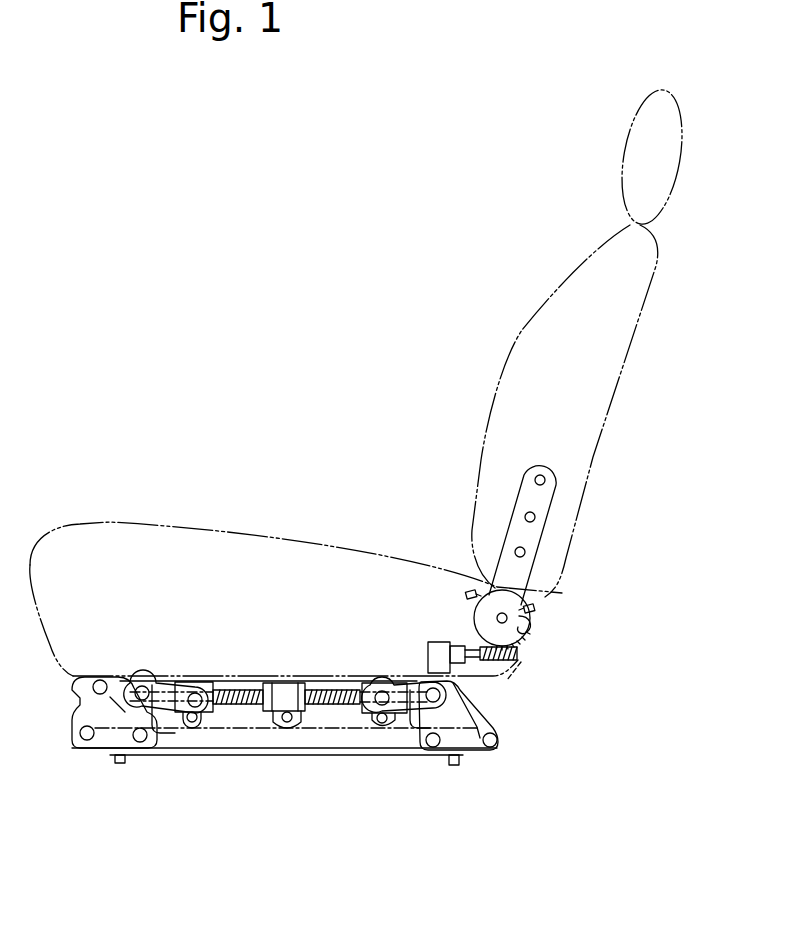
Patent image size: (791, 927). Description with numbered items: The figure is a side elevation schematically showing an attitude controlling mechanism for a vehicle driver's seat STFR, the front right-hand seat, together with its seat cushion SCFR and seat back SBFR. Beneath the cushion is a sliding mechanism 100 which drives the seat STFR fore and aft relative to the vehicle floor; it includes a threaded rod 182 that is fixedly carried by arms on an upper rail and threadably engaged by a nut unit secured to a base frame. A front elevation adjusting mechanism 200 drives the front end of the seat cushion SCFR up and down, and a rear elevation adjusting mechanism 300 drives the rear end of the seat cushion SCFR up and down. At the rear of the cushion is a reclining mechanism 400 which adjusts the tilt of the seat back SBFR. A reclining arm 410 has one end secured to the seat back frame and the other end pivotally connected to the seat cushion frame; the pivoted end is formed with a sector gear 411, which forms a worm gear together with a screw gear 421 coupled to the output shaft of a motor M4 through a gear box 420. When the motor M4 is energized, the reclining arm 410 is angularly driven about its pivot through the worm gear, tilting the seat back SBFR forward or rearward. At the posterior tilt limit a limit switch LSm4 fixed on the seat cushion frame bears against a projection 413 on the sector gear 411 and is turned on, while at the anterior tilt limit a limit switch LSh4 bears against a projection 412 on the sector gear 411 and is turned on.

The driver's seat STFR is at (432, 308).
The seat back SBFR is at (490, 427).
The seat cushion SCFR is at (138, 522).
The reclining mechanism 400 is at (416, 622).
The reclining arm 410 is at (537, 532).
The projection 412 is at (471, 614).
The projection 413 is at (528, 623).
The sector gear 411 is at (518, 655).
The screw gear 421 is at (518, 663).
The gear box 420 is at (498, 663).
The motor M4 is at (428, 658).
The limit switch LSm4 is at (468, 593).
The limit switch LSh4 is at (537, 606).
The front elevation adjusting mechanism 200 is at (176, 720).
The sliding mechanism 100 is at (256, 721).
The threaded rod 182 is at (332, 708).
The rear elevation adjusting mechanism 300 is at (366, 725).